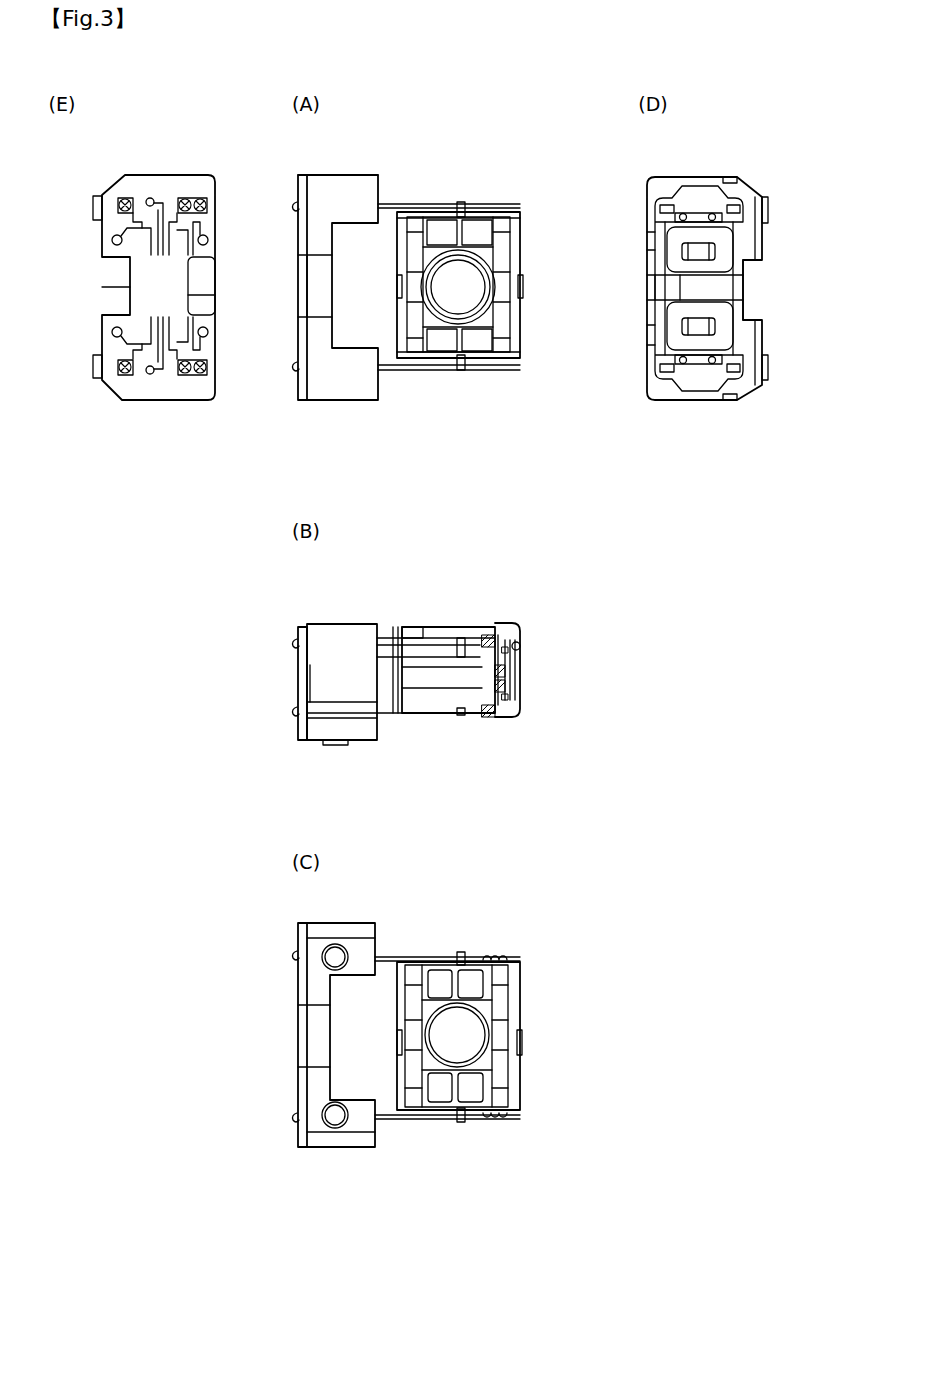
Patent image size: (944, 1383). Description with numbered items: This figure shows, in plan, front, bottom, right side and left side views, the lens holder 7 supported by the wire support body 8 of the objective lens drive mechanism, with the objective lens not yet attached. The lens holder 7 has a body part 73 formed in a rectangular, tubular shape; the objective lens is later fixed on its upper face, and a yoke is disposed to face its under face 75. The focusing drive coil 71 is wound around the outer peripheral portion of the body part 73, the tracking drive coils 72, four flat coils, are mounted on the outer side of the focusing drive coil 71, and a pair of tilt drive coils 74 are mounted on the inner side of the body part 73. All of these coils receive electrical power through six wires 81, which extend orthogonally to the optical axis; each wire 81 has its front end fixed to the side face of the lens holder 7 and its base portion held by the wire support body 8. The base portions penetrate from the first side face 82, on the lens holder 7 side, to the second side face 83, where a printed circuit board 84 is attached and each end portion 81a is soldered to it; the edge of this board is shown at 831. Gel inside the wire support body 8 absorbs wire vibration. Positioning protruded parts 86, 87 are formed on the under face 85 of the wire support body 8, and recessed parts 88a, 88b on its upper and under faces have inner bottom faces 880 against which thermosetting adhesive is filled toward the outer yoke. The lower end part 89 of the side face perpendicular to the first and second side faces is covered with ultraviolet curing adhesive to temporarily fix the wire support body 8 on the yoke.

The lens holder 7 is at (539, 226).
The focusing drive coil 71 is at (702, 288).
The tracking drive coils 72 is at (672, 233).
The body part 73 is at (513, 352).
The tilt drive coils 74 is at (475, 970).
The under face 75 is at (505, 713).
The wire support body 8 is at (340, 193).
The wires 81 is at (403, 200).
The end portion 81a is at (199, 200).
The first side face 82 is at (377, 190).
The second side face 83 is at (308, 382).
The base plate edge 831 is at (300, 176).
The printed circuit board 84 is at (183, 396).
The under face 85 is at (763, 327).
The positioning protruded part 86 is at (92, 368).
The positioning protruded part 87 is at (92, 205).
The recessed part 88a is at (200, 273).
The recessed part 88b is at (120, 297).
The inner bottom faces 880 is at (118, 290).
The lower end part 89 is at (104, 192).